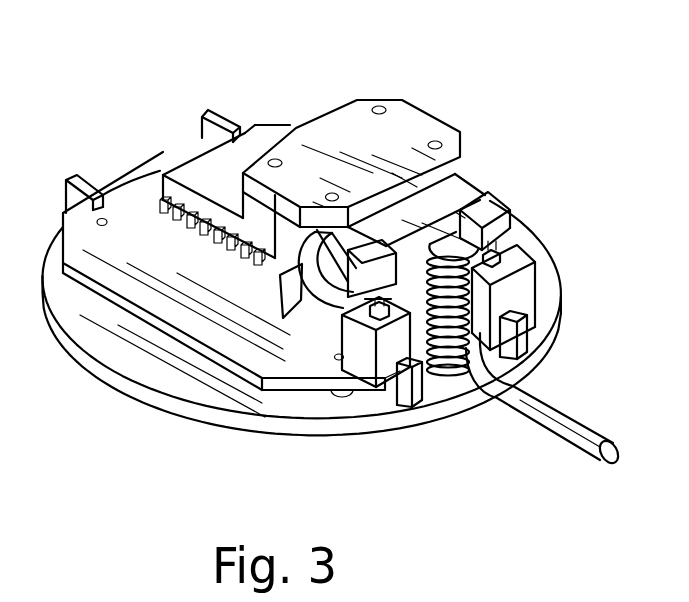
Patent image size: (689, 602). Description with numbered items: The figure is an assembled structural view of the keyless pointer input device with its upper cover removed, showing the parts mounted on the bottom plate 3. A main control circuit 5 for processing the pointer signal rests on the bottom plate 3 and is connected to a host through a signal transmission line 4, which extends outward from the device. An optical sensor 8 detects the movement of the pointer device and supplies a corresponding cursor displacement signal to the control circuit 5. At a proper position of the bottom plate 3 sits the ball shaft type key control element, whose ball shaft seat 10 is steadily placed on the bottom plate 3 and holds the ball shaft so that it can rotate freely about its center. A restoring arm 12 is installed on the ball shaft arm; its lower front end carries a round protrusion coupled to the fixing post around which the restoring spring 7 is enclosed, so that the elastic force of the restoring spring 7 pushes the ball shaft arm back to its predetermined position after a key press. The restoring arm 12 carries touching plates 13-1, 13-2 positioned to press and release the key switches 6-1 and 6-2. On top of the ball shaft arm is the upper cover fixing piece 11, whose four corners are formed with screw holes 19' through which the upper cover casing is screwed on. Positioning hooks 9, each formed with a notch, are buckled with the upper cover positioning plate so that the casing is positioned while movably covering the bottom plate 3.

The bottom plate 3 is at (67, 337).
The signal transmission line 4 is at (573, 427).
The main control circuit 5 is at (125, 215).
The key switch 6-1 is at (387, 350).
The key switch 6-2 is at (520, 300).
The restoring spring 7 is at (461, 370).
The optical sensor 8 is at (205, 178).
The positioning hook 9 is at (72, 178).
The ball shaft seat 10 is at (325, 305).
The upper cover fixing piece 11 is at (412, 127).
The restoring arm 12 is at (470, 187).
The touching plate 13-1 is at (372, 306).
The touching plate 13-2 is at (495, 228).
The screw hole 19' is at (381, 67).